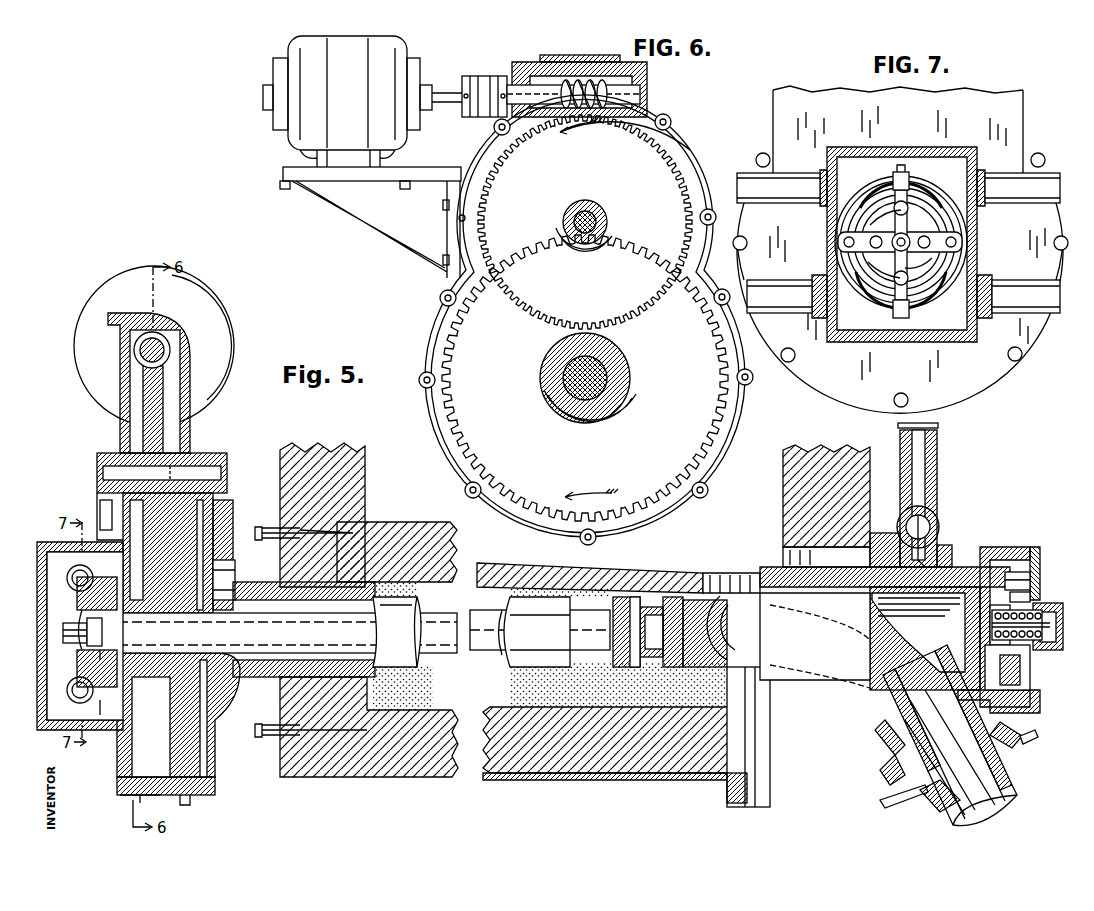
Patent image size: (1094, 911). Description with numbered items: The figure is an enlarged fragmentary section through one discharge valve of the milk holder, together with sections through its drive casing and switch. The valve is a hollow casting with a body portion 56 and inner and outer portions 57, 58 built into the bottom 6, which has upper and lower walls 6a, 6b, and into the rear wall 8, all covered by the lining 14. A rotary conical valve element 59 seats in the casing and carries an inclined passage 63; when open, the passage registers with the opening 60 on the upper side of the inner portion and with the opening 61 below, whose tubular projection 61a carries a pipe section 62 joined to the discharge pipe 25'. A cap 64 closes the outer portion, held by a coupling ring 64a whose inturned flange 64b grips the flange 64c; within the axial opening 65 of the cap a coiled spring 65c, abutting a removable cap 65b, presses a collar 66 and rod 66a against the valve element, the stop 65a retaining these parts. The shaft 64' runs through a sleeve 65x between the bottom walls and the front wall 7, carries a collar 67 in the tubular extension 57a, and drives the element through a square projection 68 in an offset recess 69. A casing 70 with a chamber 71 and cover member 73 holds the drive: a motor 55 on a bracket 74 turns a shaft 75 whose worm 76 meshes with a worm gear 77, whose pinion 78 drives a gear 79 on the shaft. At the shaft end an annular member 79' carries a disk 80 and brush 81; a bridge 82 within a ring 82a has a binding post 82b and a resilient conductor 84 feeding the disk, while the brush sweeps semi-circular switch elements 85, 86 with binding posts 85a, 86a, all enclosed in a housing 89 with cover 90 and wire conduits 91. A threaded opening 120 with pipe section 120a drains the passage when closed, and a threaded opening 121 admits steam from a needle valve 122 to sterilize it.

In FIG. 5, the bottom 6 is at (458, 546).
In FIG. 5, the upper bottom wall 6a is at (520, 568).
In FIG. 5, the lower bottom wall 6b is at (438, 772).
In FIG. 5, the front wall 7 is at (350, 445).
In FIG. 5, the rear wall 8 is at (835, 445).
In FIG. 5, the lining 14 is at (783, 482).
In FIG. 5, the discharge pipe 25' is at (948, 763).
In FIG. 6, the electric motor 55 is at (285, 142).
In FIG. 5, the electric motor 55 is at (200, 312).
In FIG. 5, the body portion 56 is at (878, 533).
In FIG. 5, the inner portion 57 is at (684, 597).
In FIG. 5, the tubular extension 57a is at (625, 595).
In FIG. 5, the outer portion 58 is at (958, 567).
In FIG. 5, the rotary conical valve element 59 is at (660, 597).
In FIG. 5, the opening 60 is at (740, 575).
In FIG. 5, the opening 61 is at (905, 680).
In FIG. 5, the tubular projection 61a is at (893, 772).
In FIG. 5, the pipe section 62 is at (1020, 712).
In FIG. 5, the passage 63 is at (817, 641).
In FIG. 6, the cap 64 is at (585, 378).
In FIG. 5, the cap 64 is at (985, 663).
In FIG. 5, the shaft 64' is at (540, 640).
In FIG. 5, the coupling ring 64a is at (1000, 546).
In FIG. 5, the inturned flange 64b is at (1040, 540).
In FIG. 5, the flange 64c is at (1032, 690).
In FIG. 5, the axial opening 65 is at (1030, 650).
In FIG. 5, the stop 65a is at (990, 612).
In FIG. 5, the cap 65b is at (1027, 606).
In FIG. 5, the coiled spring 65c is at (1022, 578).
In FIG. 5, the sleeve 65x is at (425, 598).
In FIG. 5, the collar 66 is at (298, 602).
In FIG. 5, the rod or plunger 66a is at (1025, 592).
In FIG. 5, the collar 67 is at (612, 616).
In FIG. 5, the projection 68 is at (655, 634).
In FIG. 5, the recess 69 is at (728, 596).
In FIG. 6, the casing 70 is at (436, 326).
In FIG. 5, the casing 70 is at (208, 516).
In FIG. 5, the chamber 71 is at (232, 560).
In FIG. 5, the cover member 73 is at (90, 506).
In FIG. 6, the bracket 74 is at (378, 222).
In FIG. 6, the shaft 75 is at (518, 80).
In FIG. 6, the worm 76 is at (590, 80).
In FIG. 5, the worm 76 is at (170, 350).
In FIG. 6, the worm gear 77 is at (680, 152).
In FIG. 5, the pinion 78 is at (172, 322).
In FIG. 5, the gear 79 is at (178, 729).
In FIG. 5, the annular member 79' is at (273, 633).
In FIG. 7, the disk 80 is at (920, 218).
In FIG. 7, the brush 81 is at (893, 205).
In FIG. 7, the bridge 82 is at (950, 237).
In FIG. 5, the bridge 82 is at (85, 622).
In FIG. 7, the ring 82a is at (916, 292).
In FIG. 5, the ring 82a is at (62, 578).
In FIG. 5, the binding post 82b is at (80, 650).
In FIG. 7, the conductor 84 is at (890, 272).
In FIG. 5, the conductor 84 is at (75, 660).
In FIG. 7, the switch element 85 is at (972, 222).
In FIG. 7, the binding post 85a is at (908, 180).
In FIG. 7, the switch element 86 is at (950, 273).
In FIG. 7, the binding post 86a is at (902, 318).
In FIG. 7, the housing 89 is at (900, 147).
In FIG. 5, the housing 89 is at (108, 728).
In FIG. 5, the cover 90 is at (40, 678).
In FIG. 7, the wire conduits 91 is at (806, 174).
In FIG. 5, the threaded opening 120 is at (775, 640).
In FIG. 5, the pipe section 120a is at (730, 790).
In FIG. 5, the threaded opening 121 is at (940, 547).
In FIG. 5, the needle valve 122 is at (937, 470).